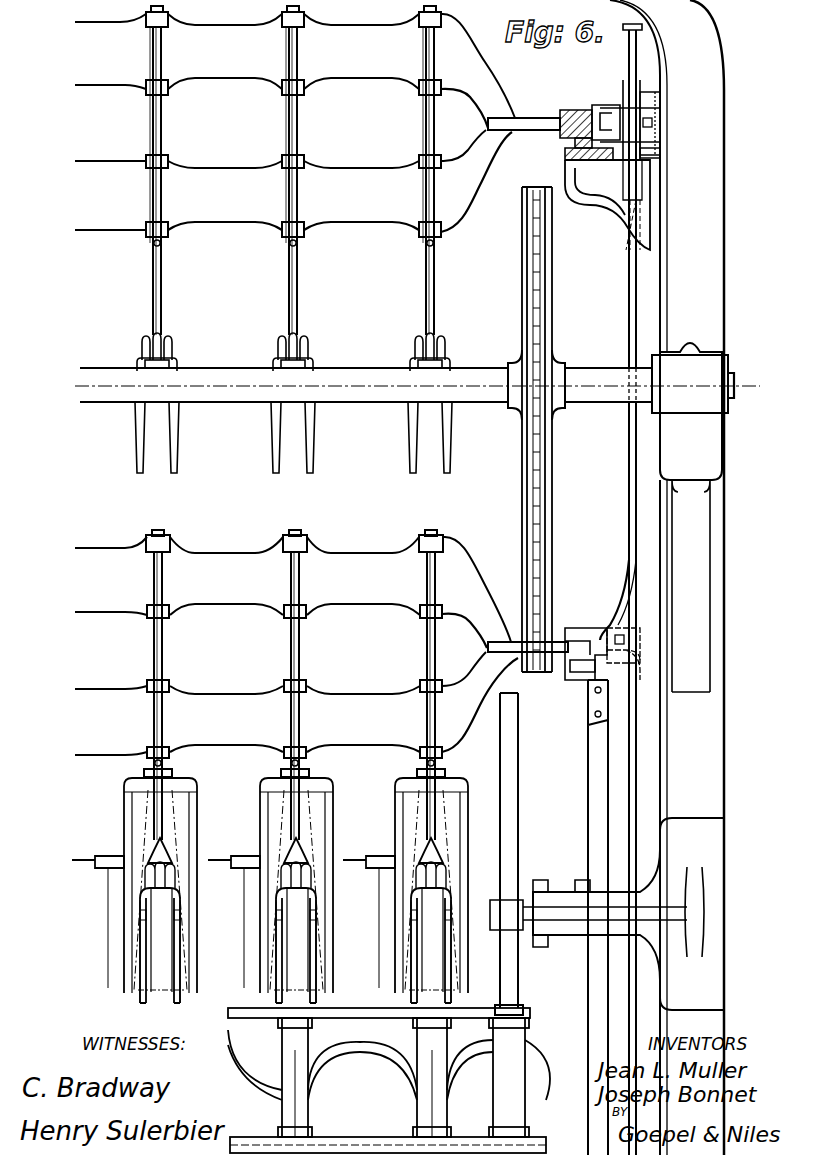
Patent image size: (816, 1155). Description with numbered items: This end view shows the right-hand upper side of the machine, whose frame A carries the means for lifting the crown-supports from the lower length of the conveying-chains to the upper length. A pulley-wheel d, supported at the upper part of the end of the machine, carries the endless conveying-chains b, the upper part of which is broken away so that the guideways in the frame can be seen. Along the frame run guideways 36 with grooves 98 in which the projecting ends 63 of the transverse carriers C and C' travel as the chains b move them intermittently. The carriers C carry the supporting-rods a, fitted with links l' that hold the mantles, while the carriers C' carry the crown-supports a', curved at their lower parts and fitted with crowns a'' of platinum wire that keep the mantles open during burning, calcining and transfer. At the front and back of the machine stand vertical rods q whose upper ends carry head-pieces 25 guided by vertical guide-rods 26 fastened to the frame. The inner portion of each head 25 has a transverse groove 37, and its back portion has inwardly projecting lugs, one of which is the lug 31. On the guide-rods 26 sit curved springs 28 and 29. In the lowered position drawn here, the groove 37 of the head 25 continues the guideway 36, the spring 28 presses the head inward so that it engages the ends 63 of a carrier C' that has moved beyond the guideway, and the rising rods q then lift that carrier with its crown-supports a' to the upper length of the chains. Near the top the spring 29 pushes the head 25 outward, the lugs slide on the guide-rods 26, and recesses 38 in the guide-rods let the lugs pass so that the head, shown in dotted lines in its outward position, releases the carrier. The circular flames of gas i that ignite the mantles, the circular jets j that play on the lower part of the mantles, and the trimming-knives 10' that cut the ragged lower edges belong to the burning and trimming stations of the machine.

The frame A is at (710, 282).
The vertical guide-rods 26 is at (632, 440).
The head-pieces 25 is at (645, 105).
The transverse carriers C is at (295, 331).
The crown-support carriers C' is at (296, 442).
The supporting-rods a is at (301, 423).
The links l' is at (267, 359).
The crown-supports a' is at (313, 292).
The crowns a'' is at (319, 613).
The endless conveying-chains b is at (540, 490).
The pulley-wheel d is at (565, 285).
The projecting ends of the carriers 63 is at (540, 105).
The transverse grooves 37 is at (598, 118).
The guideways 36 is at (580, 108).
The grooves 98 is at (567, 152).
The lug 31 is at (660, 120).
The spring 29 is at (658, 156).
The recesses 38 is at (600, 175).
The spring 28 is at (605, 598).
The circular flames of gas i is at (183, 778).
The circular jets j is at (145, 922).
The trimming-knives 10' is at (221, 863).
The vertical rods q is at (590, 798).